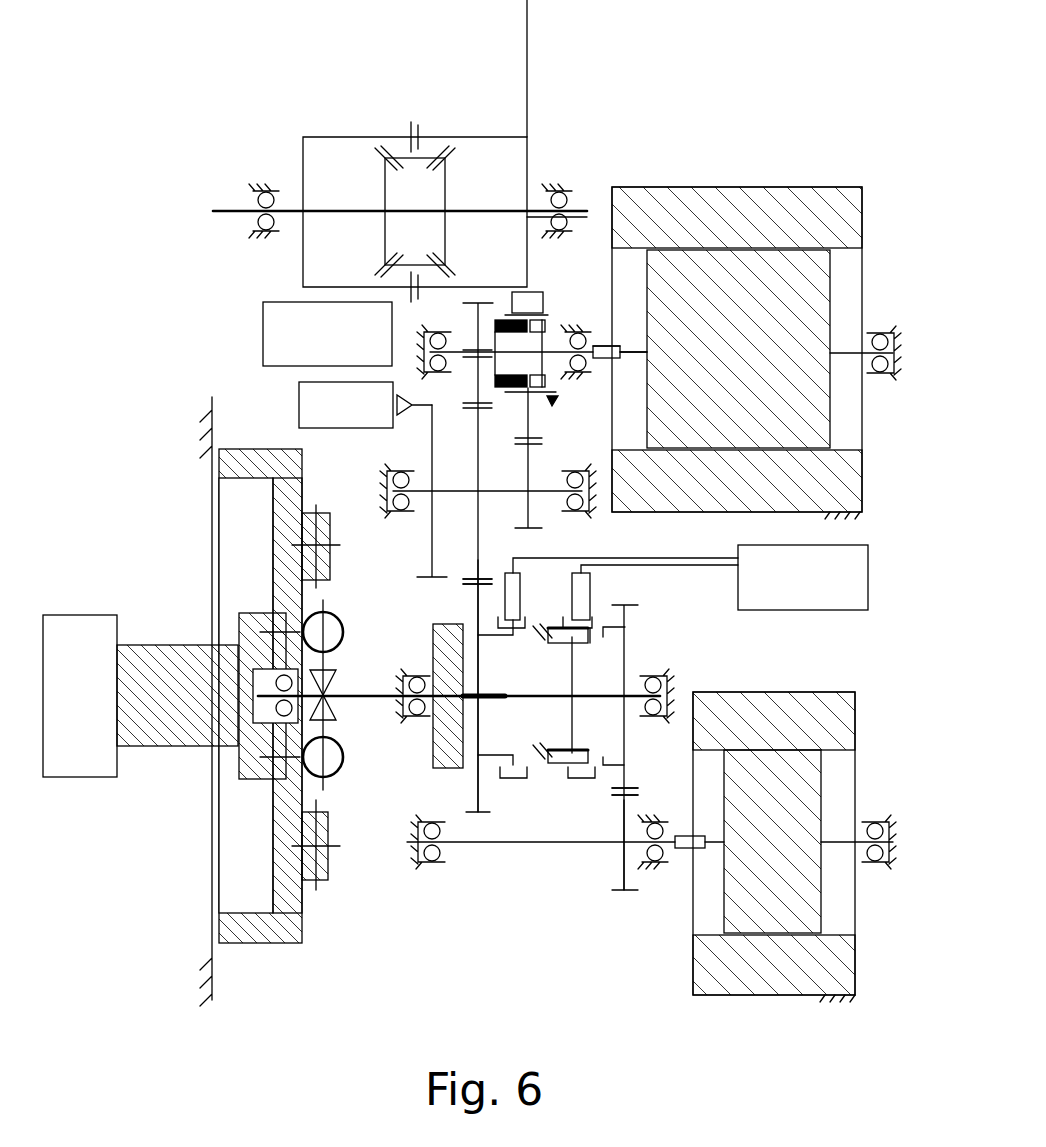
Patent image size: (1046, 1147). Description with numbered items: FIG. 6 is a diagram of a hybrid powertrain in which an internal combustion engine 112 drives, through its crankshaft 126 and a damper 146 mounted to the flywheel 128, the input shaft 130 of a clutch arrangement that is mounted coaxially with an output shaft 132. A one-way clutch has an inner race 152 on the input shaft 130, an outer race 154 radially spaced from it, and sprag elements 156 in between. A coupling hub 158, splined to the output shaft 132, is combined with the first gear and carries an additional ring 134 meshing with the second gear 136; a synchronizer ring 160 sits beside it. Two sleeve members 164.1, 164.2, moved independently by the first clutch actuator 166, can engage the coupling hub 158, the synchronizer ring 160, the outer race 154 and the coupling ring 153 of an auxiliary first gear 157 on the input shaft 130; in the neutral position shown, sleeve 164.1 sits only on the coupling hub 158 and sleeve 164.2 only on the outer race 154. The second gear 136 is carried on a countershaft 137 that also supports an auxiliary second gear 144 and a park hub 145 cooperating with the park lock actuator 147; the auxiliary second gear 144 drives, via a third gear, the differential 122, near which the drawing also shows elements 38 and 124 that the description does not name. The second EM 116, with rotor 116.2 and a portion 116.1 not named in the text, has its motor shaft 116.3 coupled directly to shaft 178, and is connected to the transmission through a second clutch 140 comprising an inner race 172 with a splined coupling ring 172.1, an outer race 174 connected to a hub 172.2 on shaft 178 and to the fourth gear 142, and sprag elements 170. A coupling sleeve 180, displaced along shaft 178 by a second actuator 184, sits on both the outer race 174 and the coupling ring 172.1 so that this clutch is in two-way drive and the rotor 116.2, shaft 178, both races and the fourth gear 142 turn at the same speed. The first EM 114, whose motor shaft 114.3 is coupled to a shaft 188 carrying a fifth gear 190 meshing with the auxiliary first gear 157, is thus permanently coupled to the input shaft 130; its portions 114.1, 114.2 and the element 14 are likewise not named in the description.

The output shaft 38 is at (527, 46).
The differential 122 is at (330, 137).
The axle shafts 124 is at (222, 215).
The second actuator 184 is at (263, 332).
The park lock actuator 147 is at (299, 404).
The park hub 145 is at (432, 438).
The inner race 172 is at (540, 333).
The fourth gear 142 is at (470, 335).
The hub 172.2 is at (580, 352).
The outer splined coupling ring 172.1 is at (540, 380).
The shaft 178 is at (478, 392).
The additional ring 134 is at (478, 594).
The second gear 136 is at (465, 578).
The second clutch 140 is at (550, 300).
The sprag elements 170 is at (500, 325).
The outer race 174 is at (500, 320).
The coupling sleeve 180 is at (545, 415).
The auxiliary second gear 144 is at (518, 478).
The countershaft 137 is at (545, 500).
The second electric machine 116 is at (777, 291).
The stator 116.1 is at (850, 478).
The rotor 116.2 is at (830, 405).
The motor shaft 116.3 is at (640, 352).
The housing 14 is at (256, 943).
The flywheel 128 is at (285, 520).
The damper 146 is at (340, 605).
The internal combustion engine 112 is at (80, 615).
The engine crankshaft 126 is at (145, 645).
The input shaft 130 is at (395, 700).
The output shaft 132 is at (462, 720).
The first sleeve member 164.1 is at (505, 600).
The second sleeve member 164.2 is at (590, 620).
The first clutch actuator 166 is at (850, 575).
The outer race 154 is at (548, 628).
The sprag elements 156 is at (590, 640).
The synchronizer ring 160 is at (538, 640).
The inner race 152 is at (575, 645).
The coupling ring 153 is at (627, 625).
The coupling hub 158 is at (525, 698).
The auxiliary first gear 157 is at (650, 710).
The shaft 188 is at (482, 848).
The fifth gear 190 is at (624, 812).
The first electric machine 114 is at (746, 894).
The stator 114.1 is at (700, 968).
The rotor 114.2 is at (725, 900).
The motor shaft 114.3 is at (700, 832).